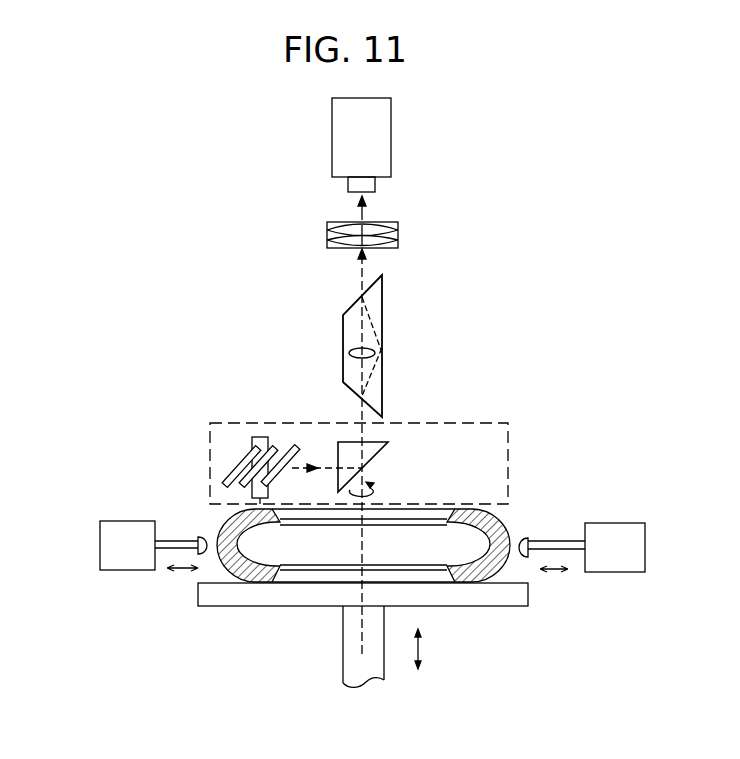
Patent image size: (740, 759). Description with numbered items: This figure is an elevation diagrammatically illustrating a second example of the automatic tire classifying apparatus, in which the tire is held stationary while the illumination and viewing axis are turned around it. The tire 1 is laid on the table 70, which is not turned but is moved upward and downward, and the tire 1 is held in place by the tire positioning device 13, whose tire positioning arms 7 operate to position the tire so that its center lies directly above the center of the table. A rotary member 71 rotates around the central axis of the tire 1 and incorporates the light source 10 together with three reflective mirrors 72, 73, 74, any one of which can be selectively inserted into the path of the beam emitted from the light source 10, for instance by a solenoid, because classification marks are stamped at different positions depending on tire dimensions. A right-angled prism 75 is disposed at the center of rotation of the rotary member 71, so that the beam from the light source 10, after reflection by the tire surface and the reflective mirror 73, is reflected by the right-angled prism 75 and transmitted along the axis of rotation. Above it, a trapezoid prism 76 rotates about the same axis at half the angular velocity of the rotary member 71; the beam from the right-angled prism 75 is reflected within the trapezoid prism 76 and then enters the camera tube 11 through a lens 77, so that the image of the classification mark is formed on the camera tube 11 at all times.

The tire 1 is at (507, 523).
The tire positioning arms 7 is at (203, 535).
The light source 10 is at (258, 436).
The camera tube 11 is at (391, 147).
The tire positioning device 13 is at (112, 570).
The table 70 is at (528, 598).
The rotary member 71 is at (473, 422).
The reflective mirror 72 is at (230, 468).
The reflective mirror 73 is at (275, 450).
The reflective mirror 74 is at (297, 450).
The right-angled prism 75 is at (375, 455).
The trapezoid prism 76 is at (383, 363).
The lens 77 is at (382, 222).